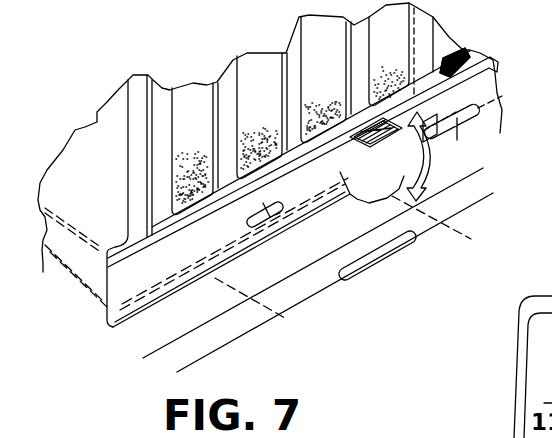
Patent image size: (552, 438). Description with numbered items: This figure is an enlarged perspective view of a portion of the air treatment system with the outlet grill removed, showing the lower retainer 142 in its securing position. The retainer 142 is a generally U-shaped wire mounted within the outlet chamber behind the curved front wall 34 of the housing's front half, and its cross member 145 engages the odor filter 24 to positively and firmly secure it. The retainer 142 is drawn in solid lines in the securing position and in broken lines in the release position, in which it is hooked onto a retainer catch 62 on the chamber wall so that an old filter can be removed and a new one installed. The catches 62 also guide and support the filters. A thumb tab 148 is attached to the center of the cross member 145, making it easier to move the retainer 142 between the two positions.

The odor filter 24 is at (170, 252).
The front wall 34 is at (329, 287).
The retainer catch 62 is at (477, 108).
The retainer 142 is at (460, 76).
The cross member 145 is at (464, 53).
The thumb tab 148 is at (430, 152).